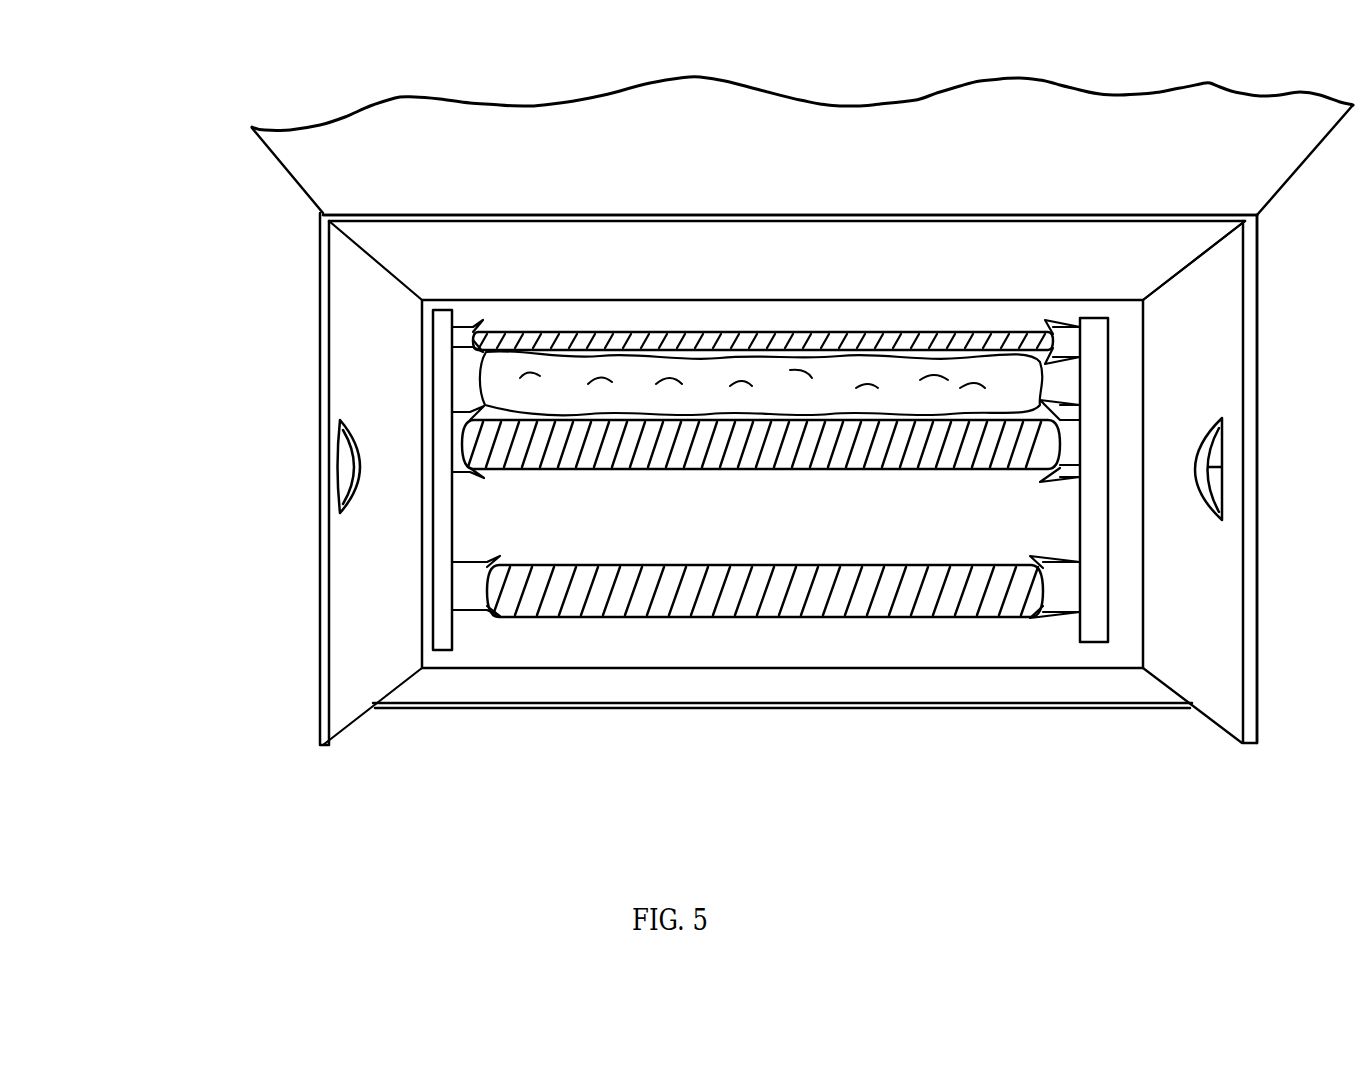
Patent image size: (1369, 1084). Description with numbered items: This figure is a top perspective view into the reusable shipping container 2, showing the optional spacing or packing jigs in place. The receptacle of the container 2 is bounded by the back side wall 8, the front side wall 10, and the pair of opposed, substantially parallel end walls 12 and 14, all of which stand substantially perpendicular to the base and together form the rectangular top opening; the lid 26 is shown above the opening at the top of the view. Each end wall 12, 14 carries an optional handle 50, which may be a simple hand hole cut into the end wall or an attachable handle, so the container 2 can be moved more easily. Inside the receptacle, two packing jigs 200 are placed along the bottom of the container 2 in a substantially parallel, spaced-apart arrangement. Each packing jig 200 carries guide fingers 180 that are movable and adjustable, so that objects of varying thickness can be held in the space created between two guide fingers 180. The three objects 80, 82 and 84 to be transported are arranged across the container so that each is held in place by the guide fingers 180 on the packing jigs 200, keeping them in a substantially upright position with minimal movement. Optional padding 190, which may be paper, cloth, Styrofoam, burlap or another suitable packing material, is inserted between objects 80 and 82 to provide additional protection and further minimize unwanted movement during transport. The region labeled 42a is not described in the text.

The reusable shipping container 2 is at (145, 543).
The back side wall 8 is at (1165, 240).
The front side wall 10 is at (815, 688).
The end wall 12 is at (1198, 609).
The end wall 14 is at (380, 609).
The lid 26 is at (342, 147).
The top wall 42a is at (722, 220).
The handle 50 is at (1258, 470).
The object 80 is at (1000, 332).
The object 82 is at (975, 452).
The object 84 is at (928, 606).
The guide fingers 180 is at (468, 482).
The padding 190 is at (872, 368).
The packing jig 200 is at (445, 642).